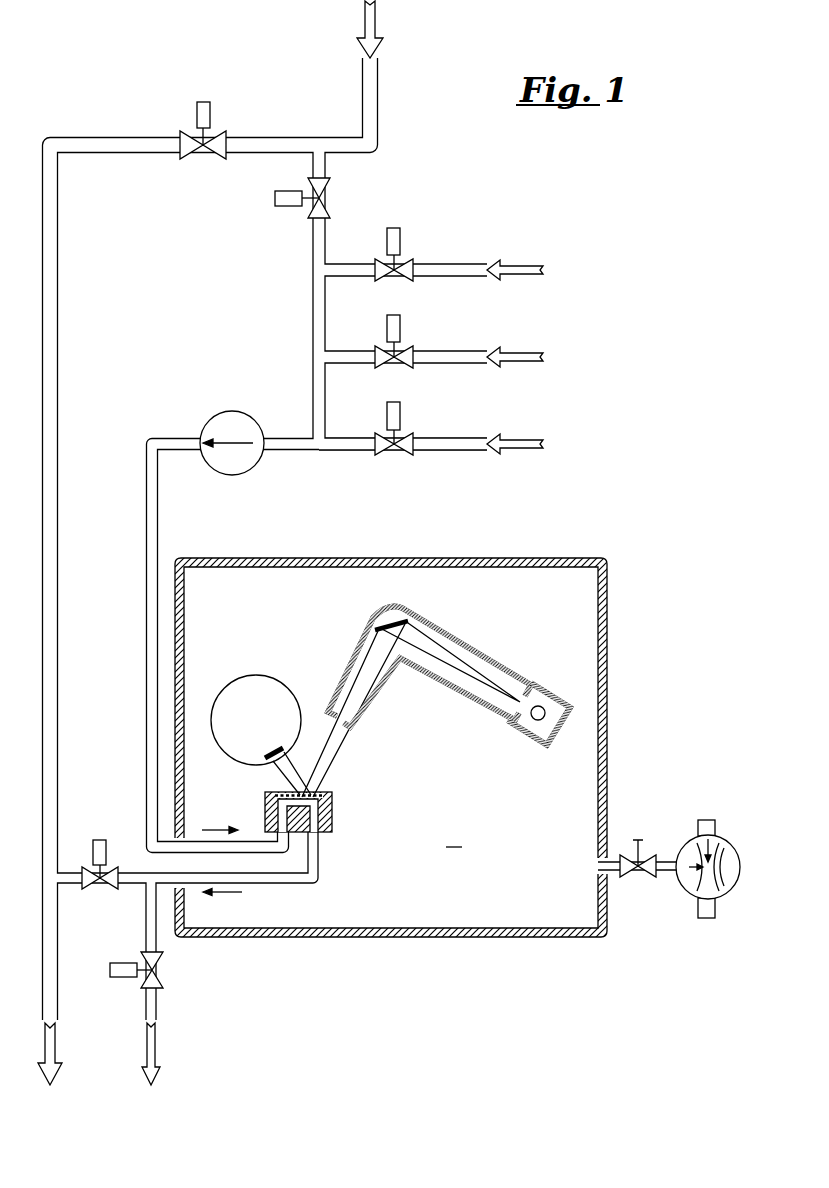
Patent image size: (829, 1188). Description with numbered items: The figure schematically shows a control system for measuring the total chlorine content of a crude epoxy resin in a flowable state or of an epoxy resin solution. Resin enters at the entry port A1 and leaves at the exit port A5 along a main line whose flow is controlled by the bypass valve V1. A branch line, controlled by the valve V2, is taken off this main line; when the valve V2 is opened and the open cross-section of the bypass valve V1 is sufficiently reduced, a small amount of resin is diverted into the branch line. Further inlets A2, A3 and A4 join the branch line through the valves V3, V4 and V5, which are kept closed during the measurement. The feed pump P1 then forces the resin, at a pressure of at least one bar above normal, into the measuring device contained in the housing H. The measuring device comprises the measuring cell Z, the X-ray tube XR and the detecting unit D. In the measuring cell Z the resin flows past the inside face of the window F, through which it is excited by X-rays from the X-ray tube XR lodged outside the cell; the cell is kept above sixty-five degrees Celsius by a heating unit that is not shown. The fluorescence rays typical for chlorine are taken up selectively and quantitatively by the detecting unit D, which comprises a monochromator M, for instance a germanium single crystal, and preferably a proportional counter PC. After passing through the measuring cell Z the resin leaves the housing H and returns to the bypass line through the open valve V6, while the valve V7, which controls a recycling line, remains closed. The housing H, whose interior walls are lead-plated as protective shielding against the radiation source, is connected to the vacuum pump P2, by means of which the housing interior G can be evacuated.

The entry port A1 is at (372, 15).
The gas inlet A2 is at (525, 270).
The gas inlet A3 is at (525, 358).
The gas inlet A4 is at (521, 445).
The exit port A5 is at (53, 1050).
The bypass valve V1 is at (214, 149).
The valve V2 is at (327, 187).
The valve V3 is at (405, 262).
The valve V4 is at (405, 349).
The valve V5 is at (405, 436).
The valve V6 is at (94, 888).
The valve V7 is at (163, 978).
The feed pump P1 is at (215, 425).
The vacuum pump P2 is at (688, 880).
The housing H is at (522, 559).
The detecting unit D is at (480, 637).
The monochromator M is at (392, 622).
The X-ray tube XR is at (243, 692).
The proportional counter PC is at (537, 721).
The measuring cell Z is at (343, 797).
The window F is at (316, 808).
The housing interior G is at (454, 836).